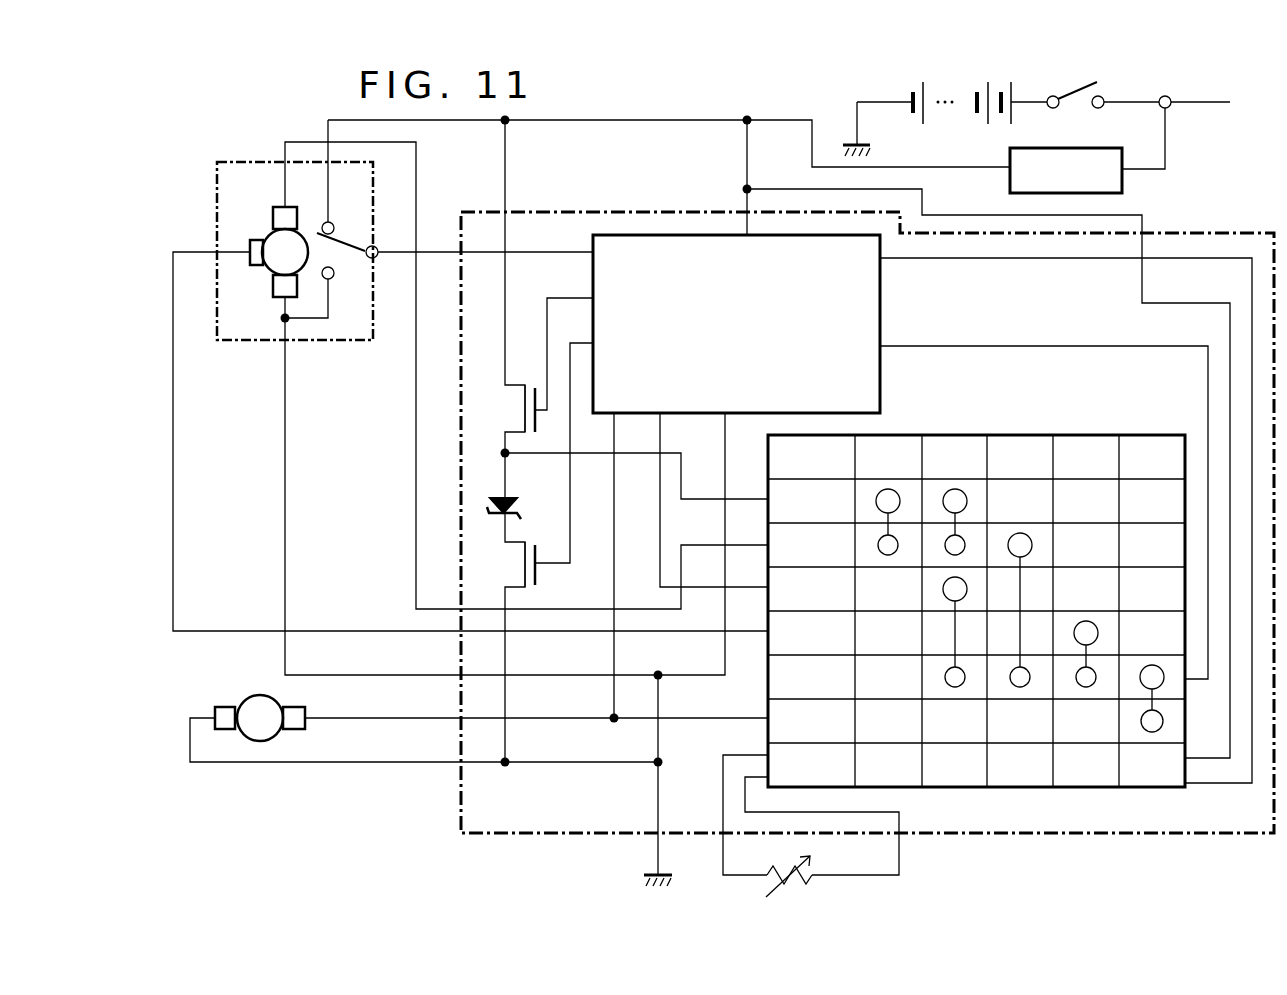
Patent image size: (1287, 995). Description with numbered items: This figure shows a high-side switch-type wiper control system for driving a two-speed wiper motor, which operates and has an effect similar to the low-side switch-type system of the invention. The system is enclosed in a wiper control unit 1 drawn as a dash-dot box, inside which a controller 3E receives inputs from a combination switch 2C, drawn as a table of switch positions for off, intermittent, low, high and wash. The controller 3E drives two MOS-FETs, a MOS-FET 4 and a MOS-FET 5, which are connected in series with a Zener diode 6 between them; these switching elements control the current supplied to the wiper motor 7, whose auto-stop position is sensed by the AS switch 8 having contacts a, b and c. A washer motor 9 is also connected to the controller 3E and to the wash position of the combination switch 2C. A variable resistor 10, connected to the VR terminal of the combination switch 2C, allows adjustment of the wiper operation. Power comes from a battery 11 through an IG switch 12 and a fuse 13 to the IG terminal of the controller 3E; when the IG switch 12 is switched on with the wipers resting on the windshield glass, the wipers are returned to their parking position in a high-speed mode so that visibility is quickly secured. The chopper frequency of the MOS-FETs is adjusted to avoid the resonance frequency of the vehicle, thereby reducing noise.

The wiper control unit 1 is at (1210, 233).
The wiper switch 2C is at (1098, 436).
The controller 3E is at (882, 285).
The MOS-FET 4 is at (517, 412).
The MOS-FET 5 is at (517, 568).
The Zener diode 6 is at (517, 508).
The wiper motor 7 is at (268, 270).
The AS switch 8 is at (337, 258).
The washer motor 9 is at (258, 695).
The variable resistor 10 is at (815, 866).
The battery 11 is at (975, 82).
The IG switch 12 is at (1103, 93).
The fuse 13 is at (1077, 148).